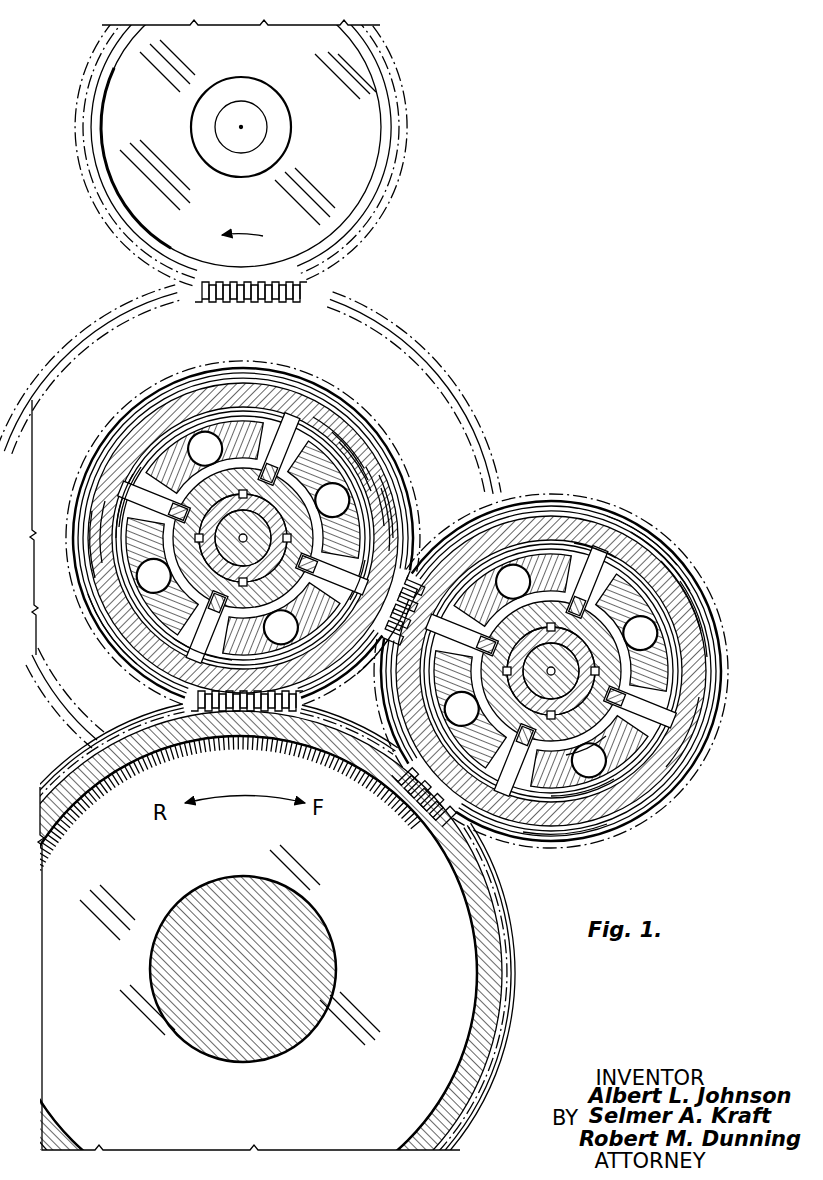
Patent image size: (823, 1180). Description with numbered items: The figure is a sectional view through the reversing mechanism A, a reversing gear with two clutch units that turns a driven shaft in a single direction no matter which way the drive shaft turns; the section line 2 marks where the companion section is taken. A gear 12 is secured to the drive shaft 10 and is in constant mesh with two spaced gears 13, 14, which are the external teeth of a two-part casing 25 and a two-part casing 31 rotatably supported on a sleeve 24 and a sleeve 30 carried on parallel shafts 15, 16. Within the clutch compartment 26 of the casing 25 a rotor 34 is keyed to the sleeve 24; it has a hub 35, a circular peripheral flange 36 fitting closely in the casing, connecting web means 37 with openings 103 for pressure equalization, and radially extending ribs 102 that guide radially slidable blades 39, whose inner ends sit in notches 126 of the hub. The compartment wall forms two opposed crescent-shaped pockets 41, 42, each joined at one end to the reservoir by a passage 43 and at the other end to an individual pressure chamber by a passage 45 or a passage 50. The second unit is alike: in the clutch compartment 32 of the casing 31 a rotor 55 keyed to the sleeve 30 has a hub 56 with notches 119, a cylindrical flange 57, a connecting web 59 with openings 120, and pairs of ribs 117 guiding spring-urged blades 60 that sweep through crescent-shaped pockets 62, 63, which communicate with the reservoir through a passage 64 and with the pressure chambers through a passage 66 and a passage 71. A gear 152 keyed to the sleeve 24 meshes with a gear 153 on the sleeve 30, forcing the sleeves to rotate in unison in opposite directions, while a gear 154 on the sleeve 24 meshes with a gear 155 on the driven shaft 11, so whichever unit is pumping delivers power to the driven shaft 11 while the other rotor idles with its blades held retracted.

The drive shaft 10 is at (322, 952).
The driven shaft 11 is at (257, 132).
The gear 12 is at (505, 1036).
The gear 13 is at (335, 410).
The gear 14 is at (708, 633).
The shaft 15 is at (375, 488).
The shaft 16 is at (690, 600).
The sleeve 24 is at (365, 463).
The two-part casing 25 is at (340, 443).
The clutch compartment 26 is at (355, 452).
The sleeve 30 is at (553, 742).
The two-part casing 31 is at (648, 535).
The clutch compartment 32 is at (660, 552).
The rotor 34 is at (388, 515).
The hub 35 is at (100, 608).
The circular peripheral flange 36 is at (95, 550).
The connecting web means 37 is at (127, 517).
The radially slidable blades 39 is at (127, 685).
The crescent-shaped pocket 41 is at (182, 420).
The crescent-shaped pocket 42 is at (177, 697).
The passage 43 is at (413, 558).
The passage 45 is at (380, 505).
The passage 50 is at (115, 652).
The rotor 55 is at (702, 657).
The hub 56 is at (600, 742).
The cylindrical flange 57 is at (590, 790).
The connecting web 59 is at (665, 578).
The blades or vanes 60 is at (540, 838).
The crescent-shaped pocket 62 is at (592, 548).
The crescent-shaped pocket 63 is at (562, 833).
The passage 64 is at (700, 615).
The passage 66 is at (505, 628).
The passage 71 is at (680, 742).
The radially extending ribs 102 is at (220, 608).
The openings 103 is at (242, 537).
The ribs 117 is at (640, 700).
The notches 119 is at (617, 702).
The openings 120 is at (550, 670).
The notches 126 is at (175, 585).
The gear 152 is at (305, 378).
The gear 153 is at (612, 508).
The gear 154 is at (463, 412).
The gear 155 is at (406, 152).
The section line 2 is at (67, 462).
The reversing mechanism A is at (410, 370).